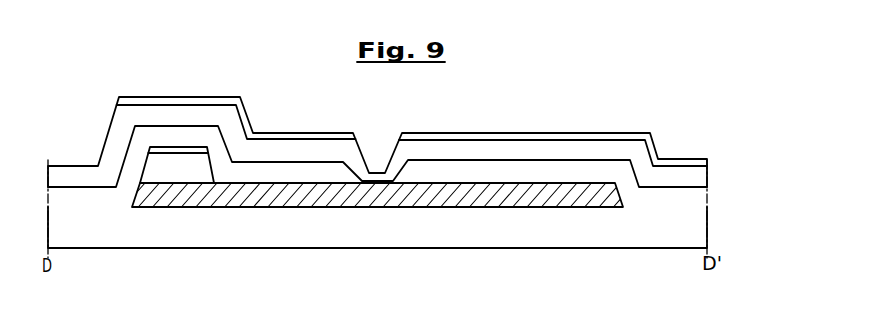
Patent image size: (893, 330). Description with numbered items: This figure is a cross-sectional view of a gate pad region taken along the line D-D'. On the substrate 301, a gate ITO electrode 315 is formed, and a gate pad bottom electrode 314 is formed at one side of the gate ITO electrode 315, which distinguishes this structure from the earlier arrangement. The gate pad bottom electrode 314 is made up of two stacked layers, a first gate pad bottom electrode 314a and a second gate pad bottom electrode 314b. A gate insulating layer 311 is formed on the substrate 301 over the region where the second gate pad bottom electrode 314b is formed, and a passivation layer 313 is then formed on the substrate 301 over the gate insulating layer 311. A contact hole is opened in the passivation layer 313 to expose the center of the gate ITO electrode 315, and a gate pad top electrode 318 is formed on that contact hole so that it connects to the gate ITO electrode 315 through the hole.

The substrate 301 is at (702, 232).
The gate insulating layer 311 is at (702, 200).
The passivation layer 313 is at (702, 175).
The gate pad bottom electrode 314 is at (182, 234).
The first gate pad bottom electrode 314a is at (158, 177).
The second gate pad bottom electrode 314b is at (199, 153).
The gate ITO electrode 315 is at (379, 195).
The gate pad top electrode 318 is at (592, 133).